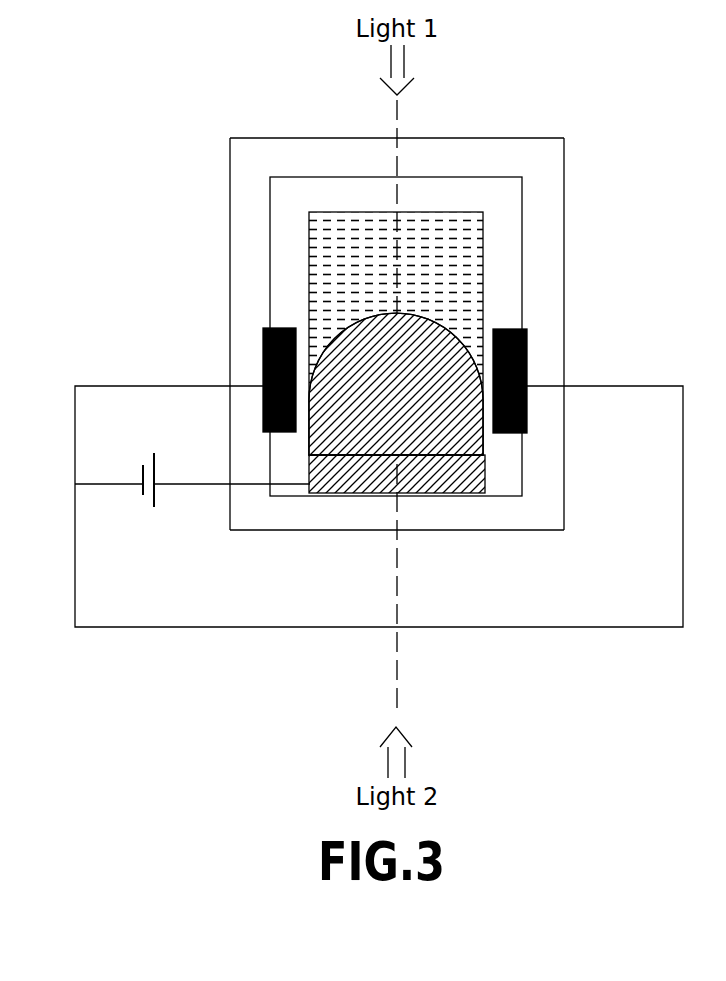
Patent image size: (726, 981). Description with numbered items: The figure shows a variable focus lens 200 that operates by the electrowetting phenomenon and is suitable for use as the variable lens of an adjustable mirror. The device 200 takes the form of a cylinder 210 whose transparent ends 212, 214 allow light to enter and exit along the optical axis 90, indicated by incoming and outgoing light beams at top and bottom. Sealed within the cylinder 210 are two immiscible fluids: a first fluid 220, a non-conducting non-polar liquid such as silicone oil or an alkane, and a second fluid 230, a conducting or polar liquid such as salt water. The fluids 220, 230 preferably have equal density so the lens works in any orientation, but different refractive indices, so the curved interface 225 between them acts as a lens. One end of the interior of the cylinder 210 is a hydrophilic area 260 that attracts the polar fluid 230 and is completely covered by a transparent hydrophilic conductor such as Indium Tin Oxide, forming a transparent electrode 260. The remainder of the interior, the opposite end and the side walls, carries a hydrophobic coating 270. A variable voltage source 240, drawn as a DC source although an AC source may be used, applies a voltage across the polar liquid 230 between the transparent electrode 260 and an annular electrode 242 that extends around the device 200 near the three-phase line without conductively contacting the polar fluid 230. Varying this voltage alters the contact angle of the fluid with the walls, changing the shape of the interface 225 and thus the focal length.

The optical axis 90 is at (407, 103).
The variable focus lens 200 is at (542, 126).
The cylinder 210 is at (534, 175).
The transparent end 212 is at (280, 138).
The transparent end 214 is at (262, 532).
The first fluid 220 is at (443, 253).
The interface 225 is at (447, 328).
The second fluid 230 is at (342, 444).
The variable voltage source 240 is at (127, 462).
The annular electrode 242 is at (264, 360).
The transparent electrode 260 is at (456, 478).
The hydrophobic coating 270 is at (282, 215).